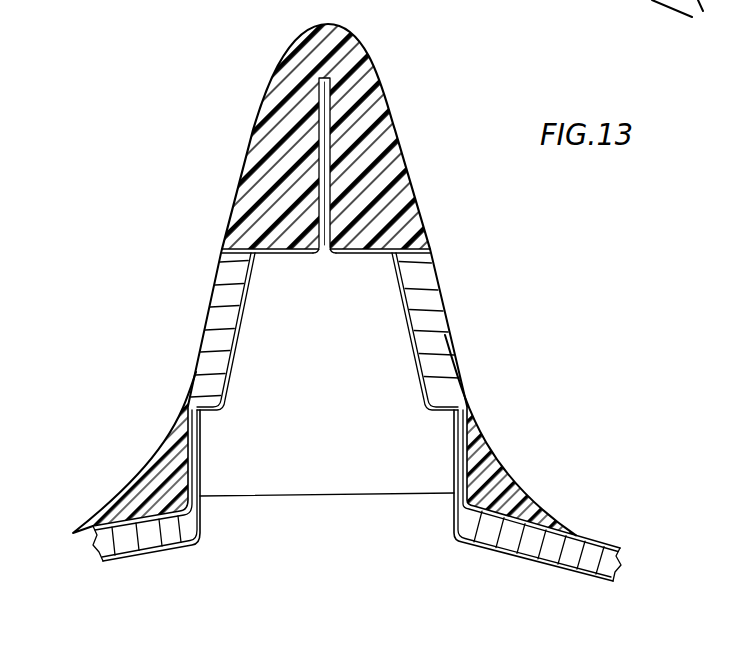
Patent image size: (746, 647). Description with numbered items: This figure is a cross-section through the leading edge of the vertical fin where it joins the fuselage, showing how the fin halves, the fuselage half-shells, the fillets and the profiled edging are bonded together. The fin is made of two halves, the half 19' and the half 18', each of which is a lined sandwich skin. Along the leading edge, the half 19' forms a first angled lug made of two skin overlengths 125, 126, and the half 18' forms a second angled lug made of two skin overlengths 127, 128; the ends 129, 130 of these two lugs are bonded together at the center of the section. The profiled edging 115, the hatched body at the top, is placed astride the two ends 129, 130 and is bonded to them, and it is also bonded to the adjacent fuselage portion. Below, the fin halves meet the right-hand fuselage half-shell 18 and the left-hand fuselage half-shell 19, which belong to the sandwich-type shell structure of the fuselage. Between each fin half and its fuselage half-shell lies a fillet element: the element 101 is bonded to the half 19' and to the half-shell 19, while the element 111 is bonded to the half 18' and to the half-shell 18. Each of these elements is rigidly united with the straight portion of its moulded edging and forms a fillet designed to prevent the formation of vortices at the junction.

The profiled edging 115 is at (392, 152).
The end of angled lug 129 is at (331, 188).
The end of angled lug 130 is at (322, 217).
The skin overlength 127 is at (218, 285).
The skin overlength 128 is at (250, 298).
The half of the vertical fin 18' is at (194, 329).
The skin overlength 125 is at (435, 273).
The skin overlength 126 is at (410, 322).
The half of the vertical fin 19' is at (452, 320).
The fillet element 111 is at (153, 477).
The fillet element 101 is at (510, 473).
The right-hand fuselage half-shell 18 is at (164, 488).
The left-hand fuselage half-shell 19 is at (537, 493).